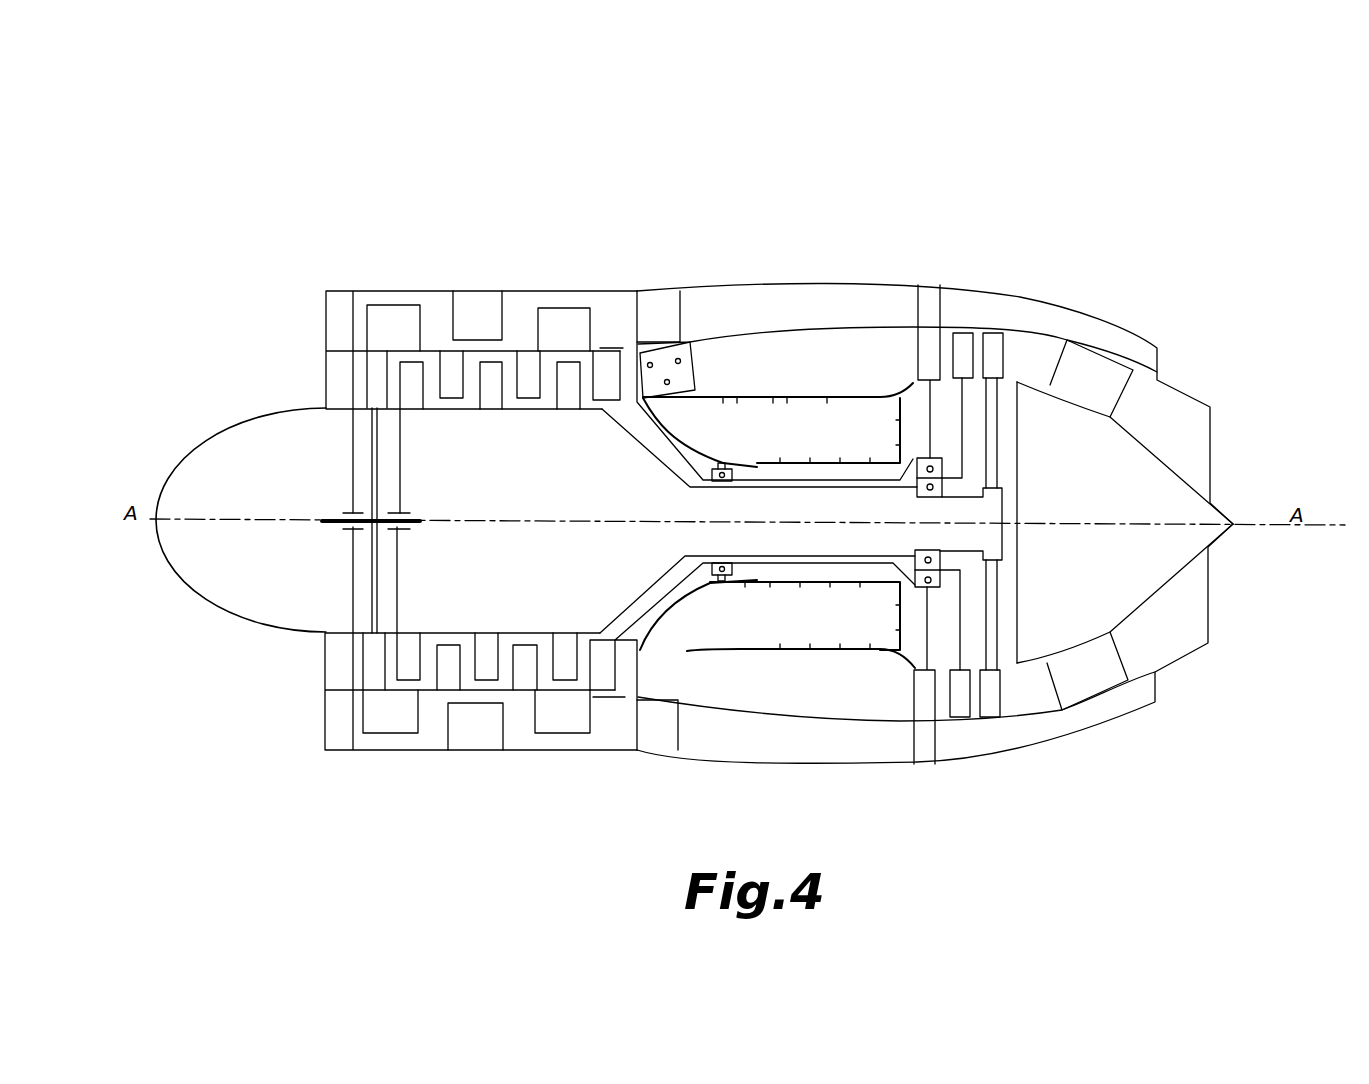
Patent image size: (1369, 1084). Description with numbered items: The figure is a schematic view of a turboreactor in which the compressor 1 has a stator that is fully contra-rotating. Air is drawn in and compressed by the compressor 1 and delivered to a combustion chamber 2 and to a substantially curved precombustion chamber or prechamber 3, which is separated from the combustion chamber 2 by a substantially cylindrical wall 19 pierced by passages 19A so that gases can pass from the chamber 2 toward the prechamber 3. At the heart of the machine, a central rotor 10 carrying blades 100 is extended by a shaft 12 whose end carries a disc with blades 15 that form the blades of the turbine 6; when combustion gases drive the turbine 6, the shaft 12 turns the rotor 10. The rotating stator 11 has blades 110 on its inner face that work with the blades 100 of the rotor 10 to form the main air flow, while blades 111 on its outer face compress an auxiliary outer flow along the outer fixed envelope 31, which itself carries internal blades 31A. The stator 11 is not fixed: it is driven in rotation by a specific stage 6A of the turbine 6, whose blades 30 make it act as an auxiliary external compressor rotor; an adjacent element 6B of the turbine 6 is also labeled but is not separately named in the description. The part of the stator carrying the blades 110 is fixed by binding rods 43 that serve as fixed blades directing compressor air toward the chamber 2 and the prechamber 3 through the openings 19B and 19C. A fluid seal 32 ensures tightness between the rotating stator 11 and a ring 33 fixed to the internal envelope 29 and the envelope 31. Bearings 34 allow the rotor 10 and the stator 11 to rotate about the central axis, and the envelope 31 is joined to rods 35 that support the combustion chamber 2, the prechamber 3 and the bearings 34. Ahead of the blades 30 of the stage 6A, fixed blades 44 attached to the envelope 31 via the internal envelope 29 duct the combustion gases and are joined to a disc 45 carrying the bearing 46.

The compressor 1 is at (362, 257).
The combustion chamber 2 is at (806, 363).
The precombustion chamber 3 is at (786, 441).
The turbine 6 is at (1033, 257).
The specific stage of the turbine 6A is at (963, 332).
The turbine support element 6B is at (1002, 332).
The rotor 10 is at (518, 486).
The stator 11 is at (507, 348).
The shaft 12 is at (802, 521).
The blades 15 is at (990, 717).
The cylindrical wall 19 is at (810, 393).
The passages 19A is at (887, 287).
The openings 19B is at (668, 430).
The openings 19C is at (905, 437).
The internal envelope 29 is at (780, 328).
The blades 30 is at (958, 720).
The outer fixed envelope 31 is at (833, 397).
The internal blades 31A is at (490, 370).
The fluid joint 32 is at (668, 317).
The ring 33 is at (612, 348).
The bearings 34 is at (347, 530).
The rods 35 is at (612, 350).
The binding rods 43 is at (600, 372).
The fixed blades 44 is at (927, 698).
The disc 45 is at (1030, 670).
The bearing 46 is at (942, 592).
The blades 100 is at (478, 312).
The blades 110 is at (450, 370).
The blades 111 is at (563, 323).